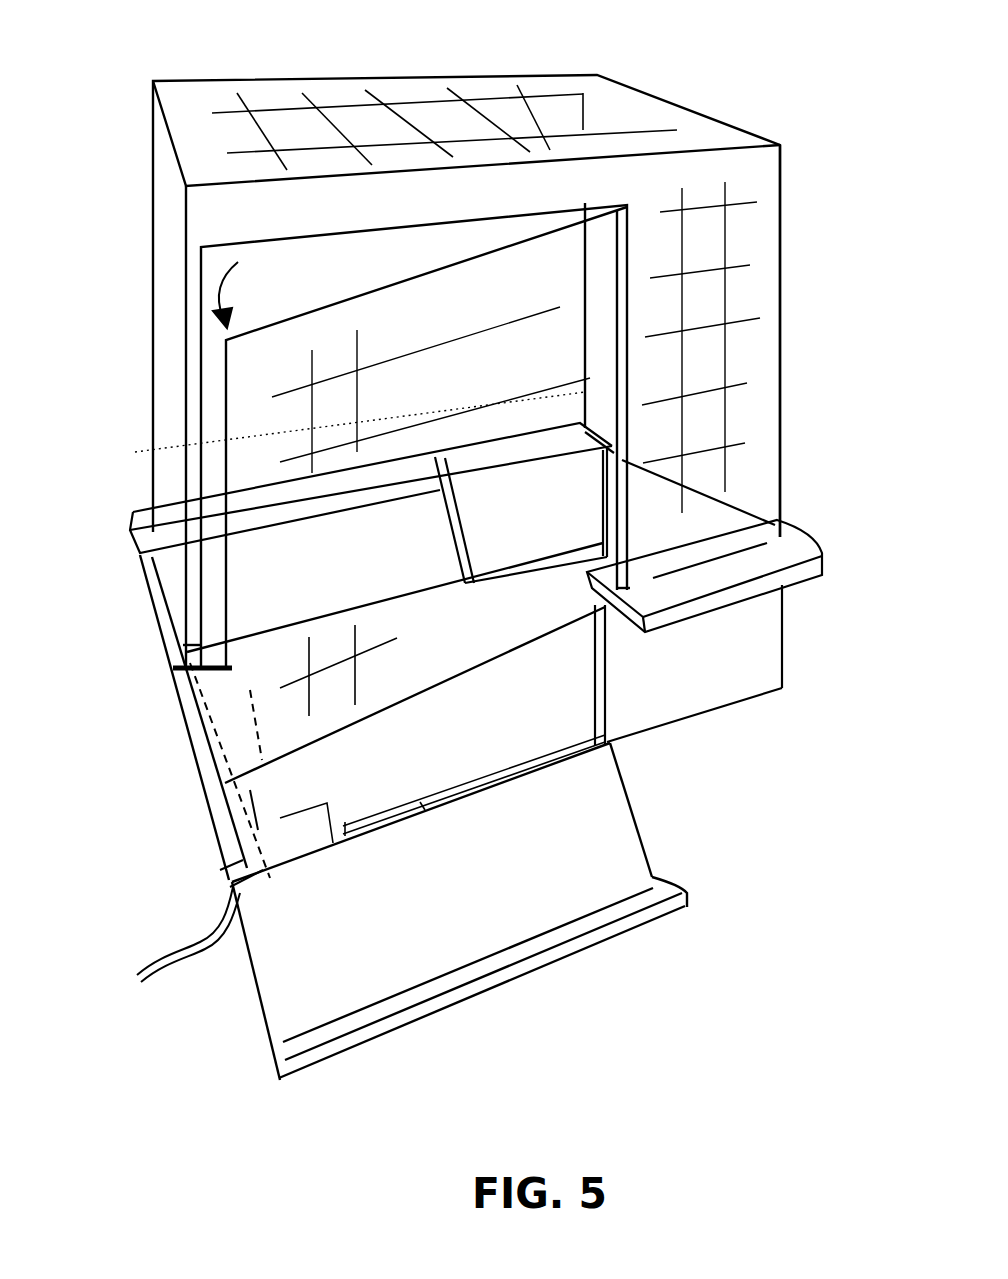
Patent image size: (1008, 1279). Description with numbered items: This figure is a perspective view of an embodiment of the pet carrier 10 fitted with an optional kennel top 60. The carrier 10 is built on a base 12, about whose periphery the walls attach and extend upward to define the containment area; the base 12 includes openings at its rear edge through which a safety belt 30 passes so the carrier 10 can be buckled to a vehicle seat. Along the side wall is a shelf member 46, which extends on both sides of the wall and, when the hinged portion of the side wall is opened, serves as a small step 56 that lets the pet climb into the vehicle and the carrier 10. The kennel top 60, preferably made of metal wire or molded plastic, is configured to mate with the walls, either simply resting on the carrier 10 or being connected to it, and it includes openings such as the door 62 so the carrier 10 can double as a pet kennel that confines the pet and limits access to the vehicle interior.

The carrier 10 is at (86, 90).
The base 12 is at (375, 712).
The safety belt 30 is at (272, 812).
The shelf member 46 is at (807, 547).
The step 56 is at (690, 939).
The kennel top 60 is at (772, 248).
The door 62 is at (260, 375).